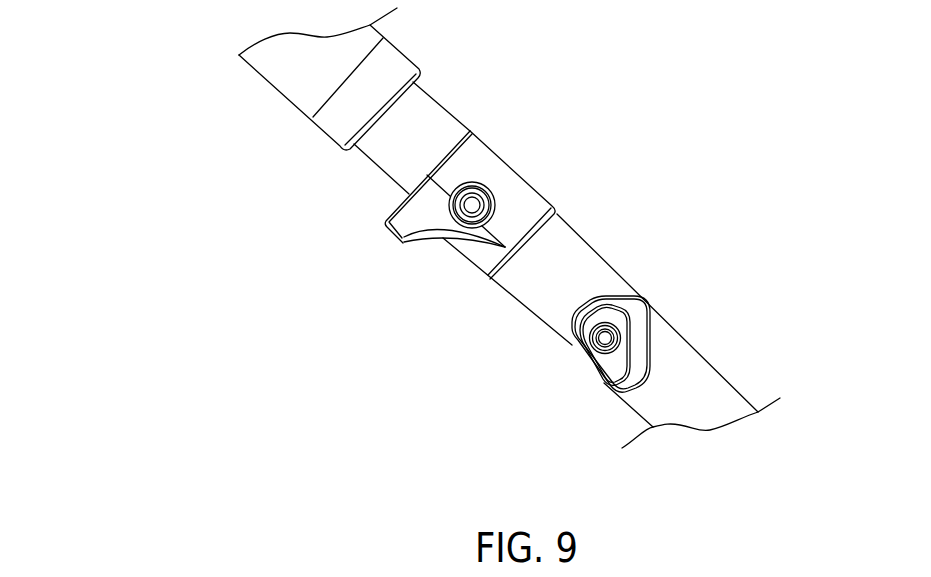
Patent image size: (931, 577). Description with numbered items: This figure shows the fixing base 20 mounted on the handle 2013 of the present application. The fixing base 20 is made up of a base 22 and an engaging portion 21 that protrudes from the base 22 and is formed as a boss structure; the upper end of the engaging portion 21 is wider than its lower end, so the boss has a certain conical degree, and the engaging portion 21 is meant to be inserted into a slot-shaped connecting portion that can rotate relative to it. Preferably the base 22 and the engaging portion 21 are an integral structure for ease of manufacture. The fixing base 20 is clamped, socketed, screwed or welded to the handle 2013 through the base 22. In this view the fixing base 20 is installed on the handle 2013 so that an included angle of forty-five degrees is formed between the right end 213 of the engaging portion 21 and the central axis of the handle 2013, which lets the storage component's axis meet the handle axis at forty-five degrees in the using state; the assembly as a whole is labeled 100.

The connecting assembly 100 is at (152, 32).
The handle 2013 is at (390, 153).
The fixing base 20 is at (599, 362).
The engaging portion 21 is at (610, 370).
The base 22 is at (577, 317).
The right end of the engaging portion 213 is at (635, 349).